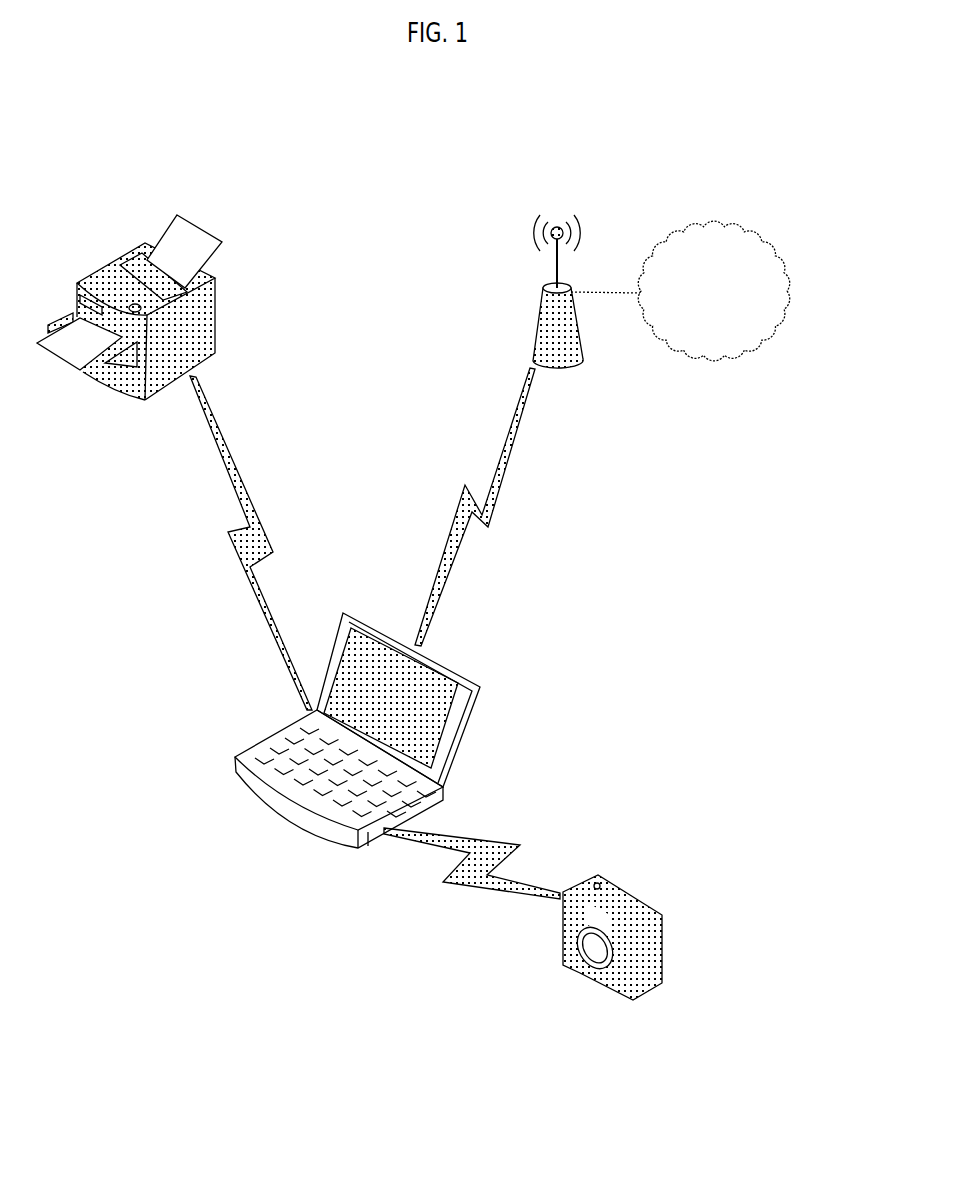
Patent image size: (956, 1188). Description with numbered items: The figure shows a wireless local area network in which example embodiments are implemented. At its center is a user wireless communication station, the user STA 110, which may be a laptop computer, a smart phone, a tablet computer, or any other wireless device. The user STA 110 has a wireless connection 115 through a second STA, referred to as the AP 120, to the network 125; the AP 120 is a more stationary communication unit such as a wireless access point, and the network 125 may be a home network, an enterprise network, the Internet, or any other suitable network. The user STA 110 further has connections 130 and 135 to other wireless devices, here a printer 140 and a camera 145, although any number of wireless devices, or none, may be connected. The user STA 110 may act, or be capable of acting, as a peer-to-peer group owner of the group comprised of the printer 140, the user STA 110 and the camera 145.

The user wireless communication station (STA) 110 is at (357, 611).
The wireless connection 115 is at (488, 527).
The second STA / access point (AP) 120 is at (558, 288).
The network 125 is at (759, 239).
The connection 130 is at (235, 547).
The connection 135 is at (443, 882).
The printer 140 is at (177, 214).
The camera 145 is at (640, 897).